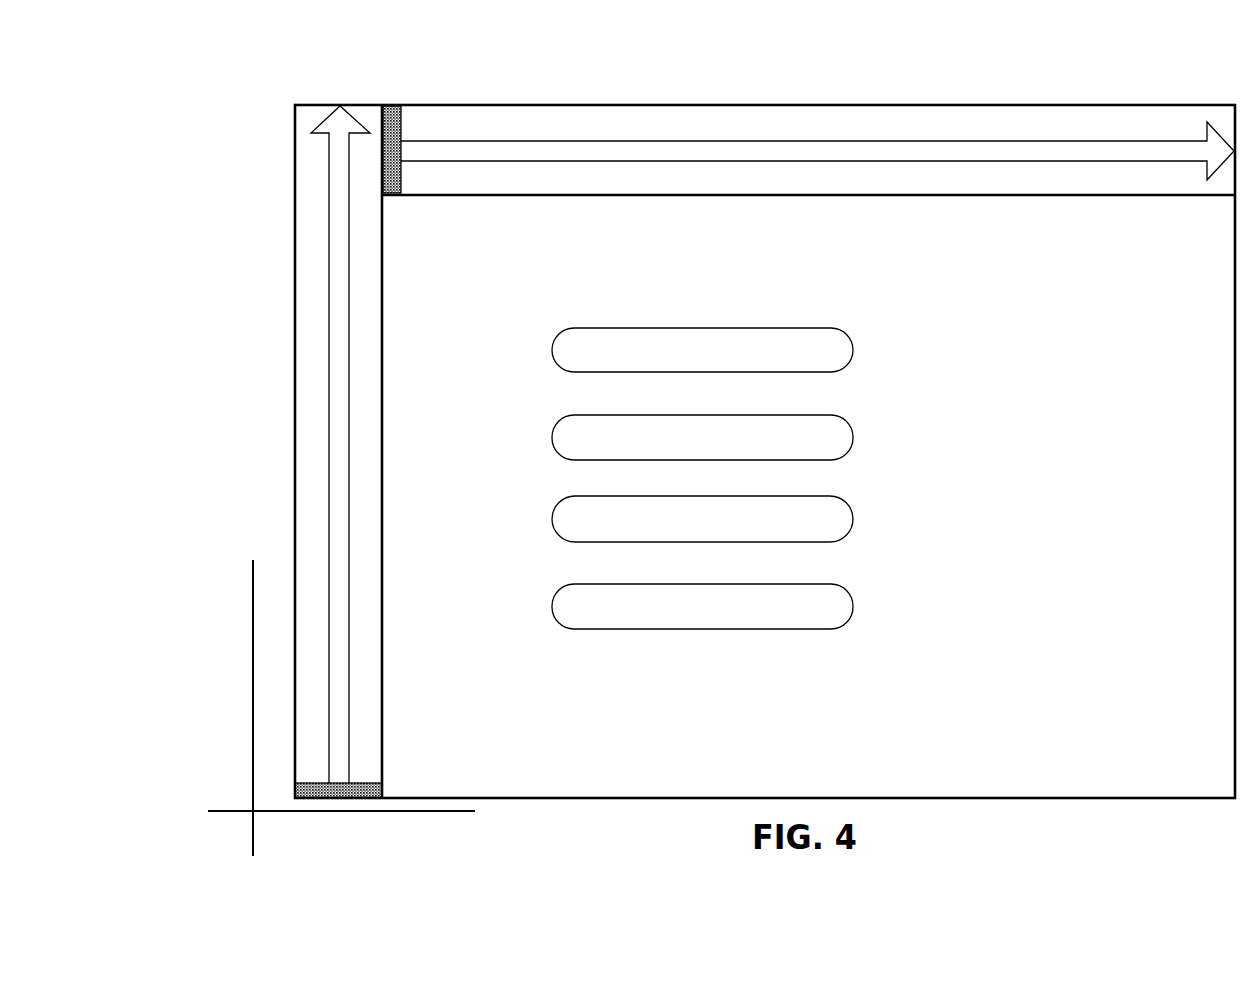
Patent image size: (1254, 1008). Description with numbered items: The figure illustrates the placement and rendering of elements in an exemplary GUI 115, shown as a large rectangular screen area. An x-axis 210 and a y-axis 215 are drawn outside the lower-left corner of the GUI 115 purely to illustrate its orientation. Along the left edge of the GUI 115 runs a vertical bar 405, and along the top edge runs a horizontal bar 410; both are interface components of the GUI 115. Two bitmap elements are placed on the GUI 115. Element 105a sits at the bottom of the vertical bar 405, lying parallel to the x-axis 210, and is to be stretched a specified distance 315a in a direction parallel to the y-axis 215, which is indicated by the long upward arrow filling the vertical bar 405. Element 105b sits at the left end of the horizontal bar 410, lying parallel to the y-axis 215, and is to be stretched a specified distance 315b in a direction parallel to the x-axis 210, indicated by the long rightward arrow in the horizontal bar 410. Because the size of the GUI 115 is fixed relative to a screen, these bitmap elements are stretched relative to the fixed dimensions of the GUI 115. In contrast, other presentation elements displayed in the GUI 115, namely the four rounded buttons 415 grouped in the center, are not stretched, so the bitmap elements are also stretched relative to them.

The GUI 115 is at (1217, 836).
The vertical bar 405 is at (283, 795).
The horizontal bar 410 is at (1232, 100).
The element 105a is at (383, 788).
The element 105b is at (398, 194).
The specified distance 315a is at (349, 420).
The specified distance 315b is at (737, 160).
The buttons 415 is at (873, 313).
The x-axis 210 is at (417, 812).
The y-axis 215 is at (253, 664).